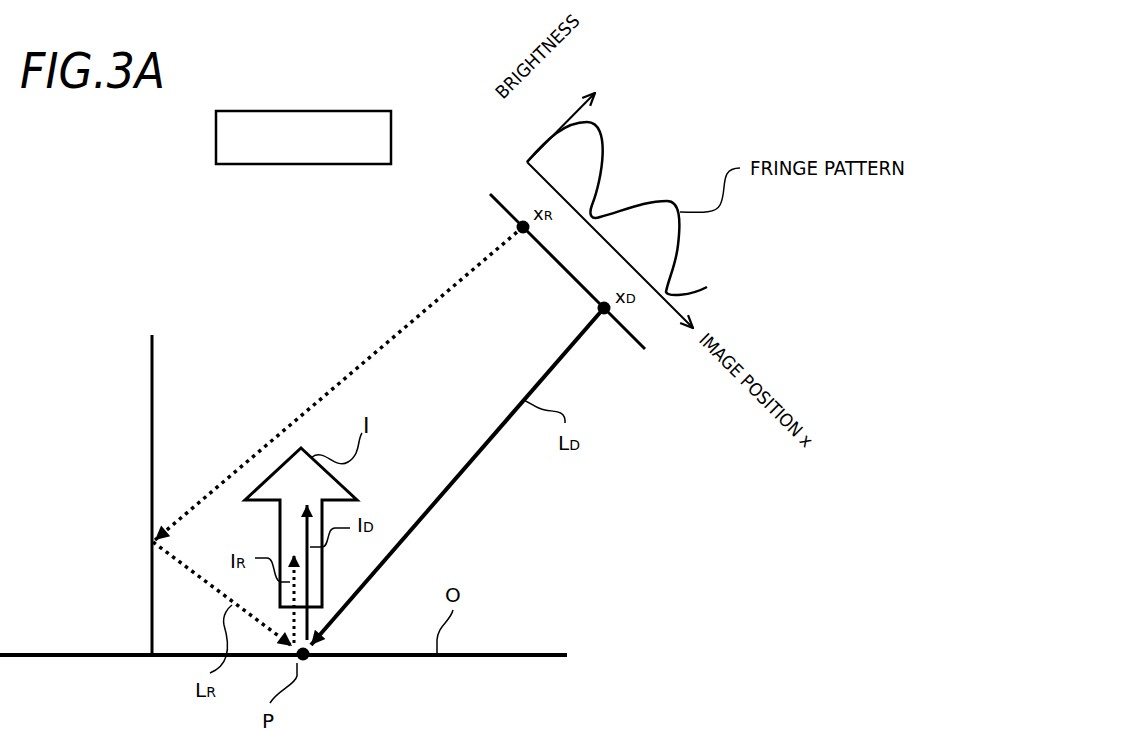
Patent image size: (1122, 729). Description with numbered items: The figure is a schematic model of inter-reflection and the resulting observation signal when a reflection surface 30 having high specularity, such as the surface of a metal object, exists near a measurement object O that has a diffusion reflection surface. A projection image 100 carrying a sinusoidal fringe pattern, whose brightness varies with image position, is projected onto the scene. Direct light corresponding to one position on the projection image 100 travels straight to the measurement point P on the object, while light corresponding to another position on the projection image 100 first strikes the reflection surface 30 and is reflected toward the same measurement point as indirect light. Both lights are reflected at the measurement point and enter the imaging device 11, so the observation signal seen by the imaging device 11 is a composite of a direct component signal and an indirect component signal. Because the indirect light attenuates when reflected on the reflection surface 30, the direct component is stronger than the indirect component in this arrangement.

The imaging device 11 is at (216, 137).
The reflection surface 30 is at (152, 368).
The projection image 100 is at (500, 193).